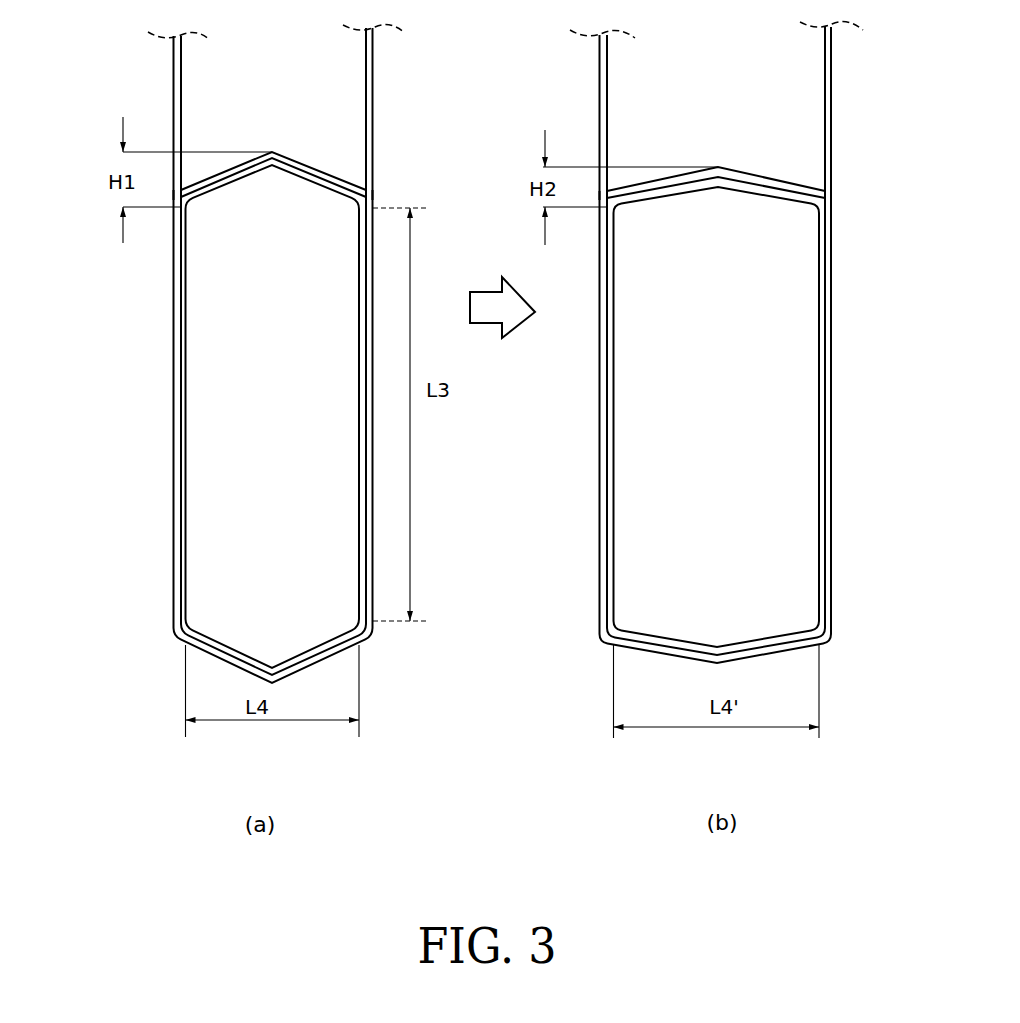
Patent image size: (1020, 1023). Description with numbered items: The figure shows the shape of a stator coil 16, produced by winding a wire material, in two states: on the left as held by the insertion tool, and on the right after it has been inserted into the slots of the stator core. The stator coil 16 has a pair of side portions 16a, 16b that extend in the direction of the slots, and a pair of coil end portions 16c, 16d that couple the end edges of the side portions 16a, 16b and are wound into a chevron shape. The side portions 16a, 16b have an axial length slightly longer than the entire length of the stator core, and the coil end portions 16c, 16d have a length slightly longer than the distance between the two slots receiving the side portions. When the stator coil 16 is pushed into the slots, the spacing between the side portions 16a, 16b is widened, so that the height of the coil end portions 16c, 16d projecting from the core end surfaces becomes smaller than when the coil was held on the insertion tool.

The stator coil 16 is at (270, 60).
The side portion 16a is at (187, 382).
The side portion 16b is at (360, 360).
The coil end portion 16c is at (290, 174).
The coil end portion 16d is at (253, 662).